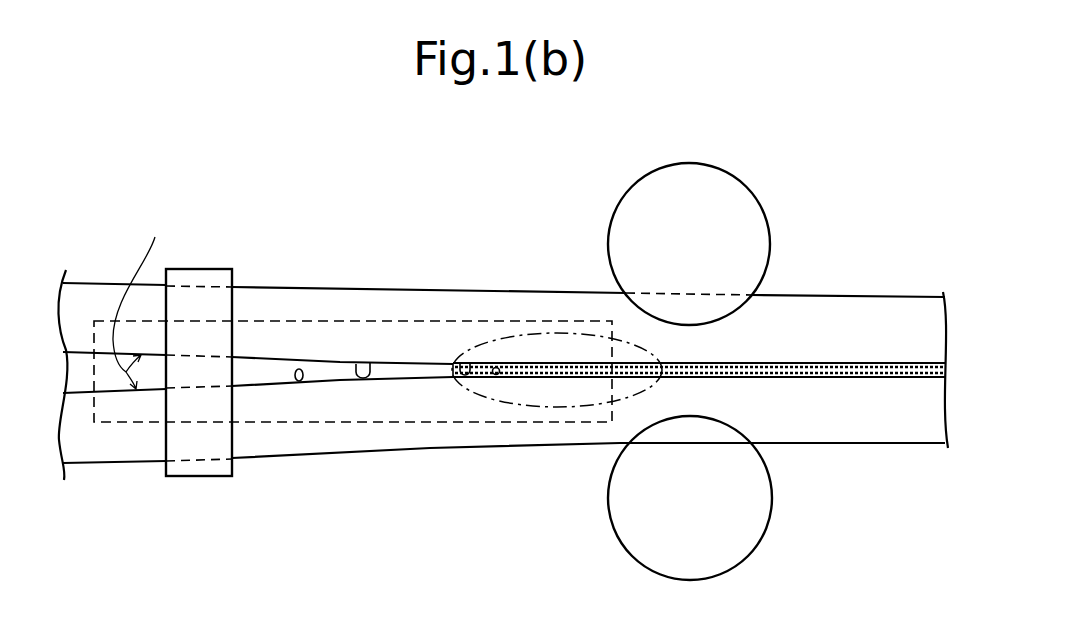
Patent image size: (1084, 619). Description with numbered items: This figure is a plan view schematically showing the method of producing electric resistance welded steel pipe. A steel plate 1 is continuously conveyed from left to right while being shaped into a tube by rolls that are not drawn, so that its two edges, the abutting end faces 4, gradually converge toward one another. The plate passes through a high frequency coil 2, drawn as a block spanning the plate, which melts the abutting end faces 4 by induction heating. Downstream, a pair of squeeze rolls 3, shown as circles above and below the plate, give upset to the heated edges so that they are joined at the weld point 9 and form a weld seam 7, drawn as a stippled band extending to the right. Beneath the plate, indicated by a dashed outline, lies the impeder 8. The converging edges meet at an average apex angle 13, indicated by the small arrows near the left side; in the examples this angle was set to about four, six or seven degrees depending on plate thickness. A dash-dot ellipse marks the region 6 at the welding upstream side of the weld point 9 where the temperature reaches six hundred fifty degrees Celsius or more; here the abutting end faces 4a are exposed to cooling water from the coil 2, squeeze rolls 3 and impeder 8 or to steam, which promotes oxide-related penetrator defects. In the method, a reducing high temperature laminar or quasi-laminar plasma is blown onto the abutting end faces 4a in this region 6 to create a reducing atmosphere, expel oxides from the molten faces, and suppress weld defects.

The steel plate 1 is at (113, 283).
The high frequency coil 2 is at (196, 478).
The squeeze rolls 3 is at (735, 218).
The abutting end faces 4 is at (370, 362).
The abutting end faces 4a is at (470, 364).
The region 6 is at (567, 333).
The weld seam 7 is at (858, 364).
The impeder 8 is at (123, 410).
The weld point 9 is at (627, 378).
The average apex angle 13 is at (143, 299).